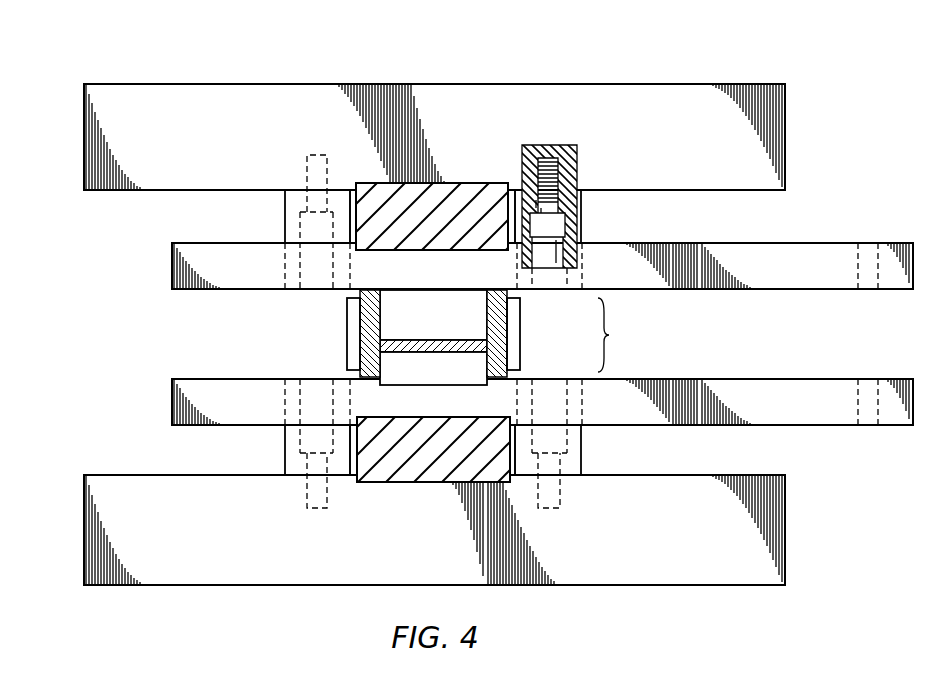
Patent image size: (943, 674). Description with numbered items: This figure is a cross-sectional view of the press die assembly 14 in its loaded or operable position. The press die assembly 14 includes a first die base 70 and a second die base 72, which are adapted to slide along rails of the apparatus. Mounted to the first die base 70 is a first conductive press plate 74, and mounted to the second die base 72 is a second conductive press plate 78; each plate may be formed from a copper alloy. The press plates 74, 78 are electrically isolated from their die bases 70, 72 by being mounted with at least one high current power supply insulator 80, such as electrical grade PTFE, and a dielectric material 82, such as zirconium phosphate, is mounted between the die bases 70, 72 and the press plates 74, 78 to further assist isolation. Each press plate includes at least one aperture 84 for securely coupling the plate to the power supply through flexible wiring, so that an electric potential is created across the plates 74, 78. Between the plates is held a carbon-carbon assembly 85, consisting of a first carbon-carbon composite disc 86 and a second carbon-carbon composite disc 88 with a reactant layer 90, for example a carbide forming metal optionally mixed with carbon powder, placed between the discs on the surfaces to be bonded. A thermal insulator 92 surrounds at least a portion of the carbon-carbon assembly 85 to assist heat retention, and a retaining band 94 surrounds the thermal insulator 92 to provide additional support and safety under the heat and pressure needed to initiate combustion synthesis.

The press die assembly 14 is at (284, 62).
The first die base 70 is at (84, 135).
The second die base 72 is at (84, 527).
The first conductive press plate 74 is at (172, 262).
The second conductive press plate 78 is at (172, 400).
The high current power supply insulator 80 is at (285, 236).
The dielectric material 82 is at (480, 183).
The aperture 84 is at (866, 258).
The carbon-carbon assembly 85 is at (620, 335).
The first carbon-carbon composite disc 86 is at (410, 298).
The second carbon-carbon composite disc 88 is at (437, 373).
The reactant layer 90 is at (400, 344).
The thermal insulator 92 is at (350, 346).
The retaining band 94 is at (347, 323).